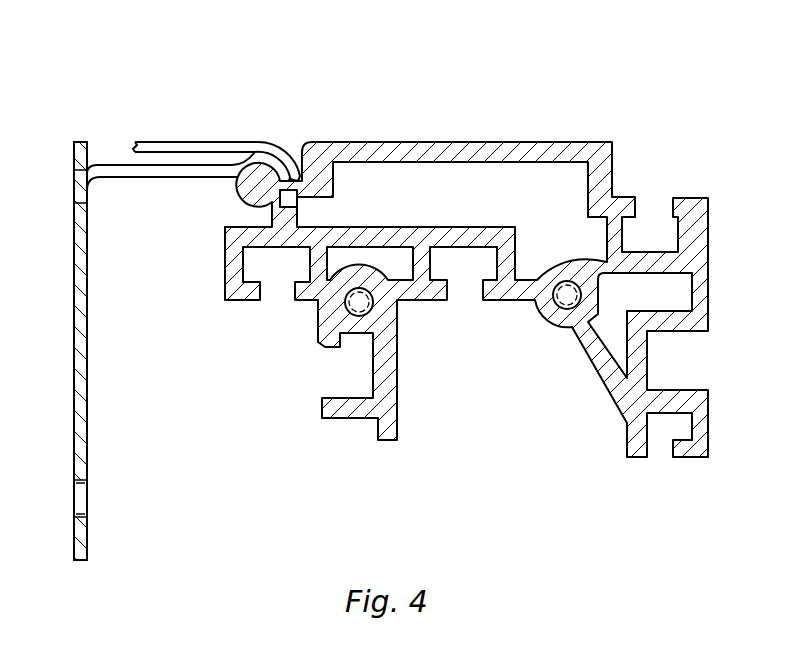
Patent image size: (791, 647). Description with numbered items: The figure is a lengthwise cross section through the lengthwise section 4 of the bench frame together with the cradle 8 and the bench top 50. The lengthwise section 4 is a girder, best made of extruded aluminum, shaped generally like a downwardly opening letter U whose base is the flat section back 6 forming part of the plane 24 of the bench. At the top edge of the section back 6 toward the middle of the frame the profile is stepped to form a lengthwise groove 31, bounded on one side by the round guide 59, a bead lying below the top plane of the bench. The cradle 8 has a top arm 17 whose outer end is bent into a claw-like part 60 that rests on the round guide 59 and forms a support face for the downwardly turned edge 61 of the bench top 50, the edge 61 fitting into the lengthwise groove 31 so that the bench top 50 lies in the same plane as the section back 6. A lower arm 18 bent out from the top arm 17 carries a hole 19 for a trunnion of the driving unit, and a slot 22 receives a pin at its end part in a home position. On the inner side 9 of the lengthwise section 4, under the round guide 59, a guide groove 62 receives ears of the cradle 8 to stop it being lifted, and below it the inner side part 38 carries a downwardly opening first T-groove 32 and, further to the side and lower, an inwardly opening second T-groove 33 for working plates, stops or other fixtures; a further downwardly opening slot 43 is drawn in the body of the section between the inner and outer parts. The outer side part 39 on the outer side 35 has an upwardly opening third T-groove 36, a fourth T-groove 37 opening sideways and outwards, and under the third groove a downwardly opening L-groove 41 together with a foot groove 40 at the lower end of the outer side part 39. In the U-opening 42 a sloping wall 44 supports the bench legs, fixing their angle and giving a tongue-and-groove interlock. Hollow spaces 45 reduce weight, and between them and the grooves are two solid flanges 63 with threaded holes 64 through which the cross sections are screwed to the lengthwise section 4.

The lengthwise section 4 is at (378, 136).
The section back 6 is at (523, 157).
The cradle 8 is at (70, 268).
The inner side 9 is at (220, 276).
The top arm 17 is at (122, 172).
The lower arm 18 is at (78, 343).
The hole 19 is at (78, 188).
The slot 22 is at (82, 499).
The plane of the bench 24 is at (460, 136).
The lengthwise groove 31 is at (308, 160).
The first T-groove 32 is at (276, 292).
The second T-groove 33 is at (347, 365).
The outer side 35 is at (752, 238).
The third T-groove 36 is at (652, 215).
The fourth T-groove 37 is at (683, 360).
The inner side part 38 is at (232, 302).
The outer side part 39 is at (638, 447).
The foot groove 40 is at (689, 463).
The L-groove 41 is at (658, 450).
The U-opening 42 is at (500, 422).
The slot 43 is at (468, 290).
The sloping wall 44 is at (603, 394).
The hollow space 45 is at (478, 202).
The bench top 50 is at (160, 142).
The round guide 59 is at (248, 174).
The claw-like part 60 is at (250, 150).
The downwardly turned edge 61 is at (292, 165).
The guide groove 62 is at (258, 218).
The solid flange 63 is at (384, 338).
The threaded hole 64 is at (362, 304).